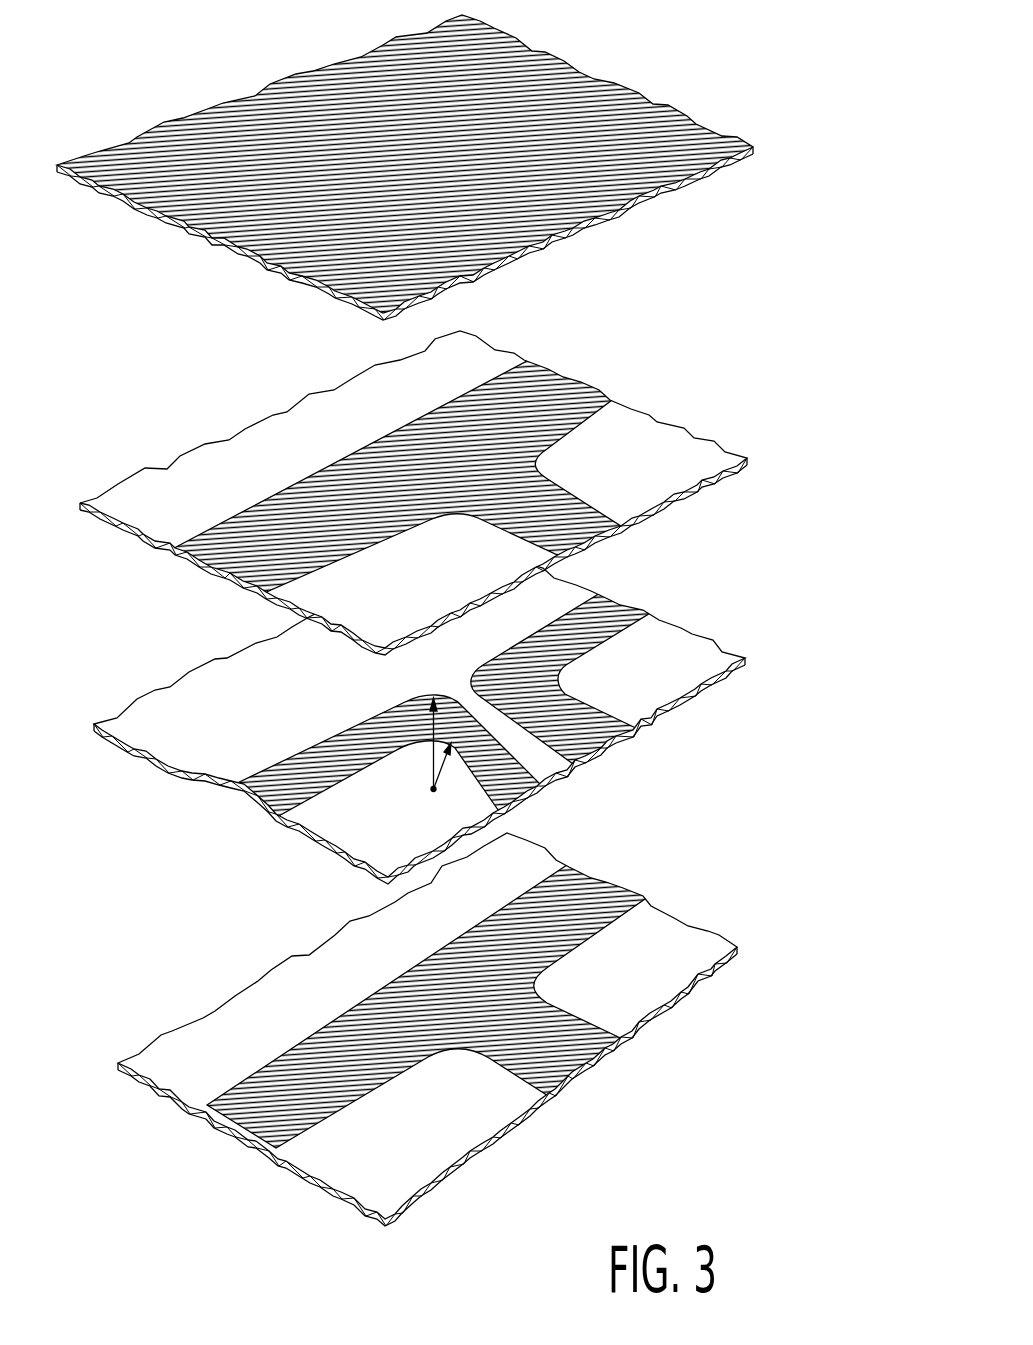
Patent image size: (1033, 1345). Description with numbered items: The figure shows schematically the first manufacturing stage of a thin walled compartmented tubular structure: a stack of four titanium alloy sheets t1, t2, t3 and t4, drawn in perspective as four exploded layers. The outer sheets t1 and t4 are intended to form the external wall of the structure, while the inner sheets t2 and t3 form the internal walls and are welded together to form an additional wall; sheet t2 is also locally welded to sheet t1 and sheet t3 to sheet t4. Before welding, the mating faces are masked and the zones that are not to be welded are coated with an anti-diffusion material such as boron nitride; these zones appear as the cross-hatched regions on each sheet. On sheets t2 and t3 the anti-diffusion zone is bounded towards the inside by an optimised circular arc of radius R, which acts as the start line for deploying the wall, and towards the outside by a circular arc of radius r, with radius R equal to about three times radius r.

The titanium alloy sheet t1 is at (648, 985).
The titanium alloy sheet t2 is at (668, 679).
The titanium alloy sheet t3 is at (656, 438).
The titanium alloy sheet t4 is at (637, 118).
The radius of circular arc R is at (432, 789).
The radius of circular arc r is at (458, 750).